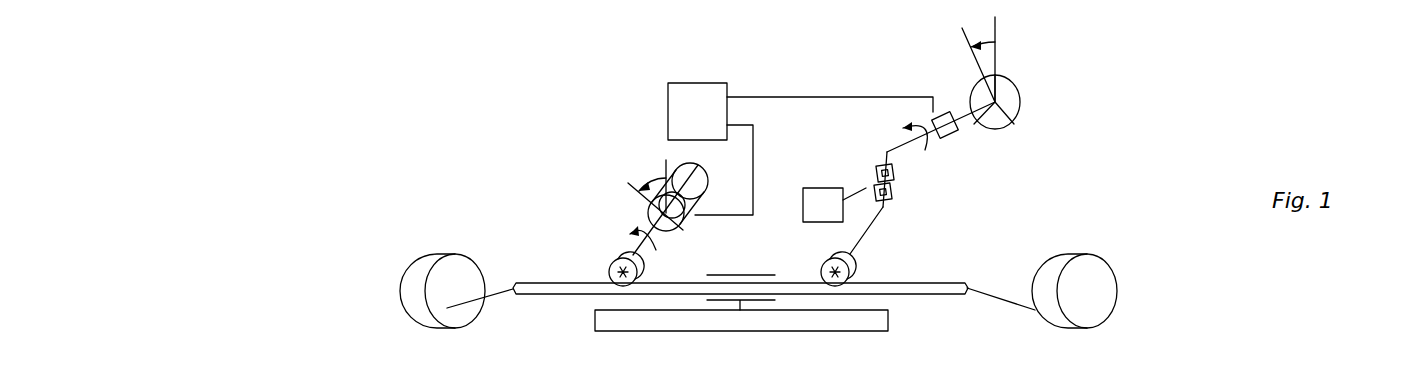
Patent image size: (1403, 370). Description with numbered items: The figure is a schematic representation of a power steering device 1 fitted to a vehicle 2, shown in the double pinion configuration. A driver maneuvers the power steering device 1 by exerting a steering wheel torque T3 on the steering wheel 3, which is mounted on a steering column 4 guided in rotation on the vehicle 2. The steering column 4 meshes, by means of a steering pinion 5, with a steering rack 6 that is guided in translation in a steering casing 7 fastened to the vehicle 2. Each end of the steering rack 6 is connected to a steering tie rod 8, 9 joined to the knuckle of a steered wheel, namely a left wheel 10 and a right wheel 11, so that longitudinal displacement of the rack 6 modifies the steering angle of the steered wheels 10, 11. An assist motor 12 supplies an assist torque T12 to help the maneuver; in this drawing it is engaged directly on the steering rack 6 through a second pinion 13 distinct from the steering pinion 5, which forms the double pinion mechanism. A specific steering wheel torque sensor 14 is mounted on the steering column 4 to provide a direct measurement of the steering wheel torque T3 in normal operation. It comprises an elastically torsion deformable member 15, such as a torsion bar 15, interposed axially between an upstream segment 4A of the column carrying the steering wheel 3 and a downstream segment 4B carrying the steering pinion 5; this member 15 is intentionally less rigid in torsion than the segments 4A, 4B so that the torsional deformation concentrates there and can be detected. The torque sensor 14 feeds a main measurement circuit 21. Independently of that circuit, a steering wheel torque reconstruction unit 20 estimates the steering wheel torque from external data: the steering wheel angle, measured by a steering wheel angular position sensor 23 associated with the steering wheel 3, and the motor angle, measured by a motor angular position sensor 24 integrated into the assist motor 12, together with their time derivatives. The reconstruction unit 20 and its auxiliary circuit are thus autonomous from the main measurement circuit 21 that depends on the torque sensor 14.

The power steering device 1 is at (1085, 148).
The vehicle 2 is at (888, 320).
The steering wheel 3 is at (1020, 95).
The steering column 4 is at (893, 158).
The upstream segment of the steering column 4A is at (887, 152).
The downstream segment of the steering column 4B is at (883, 207).
The steering pinion 5 is at (856, 278).
The steering rack 6 is at (800, 293).
The steering casing 7 is at (757, 275).
The steering tie rod 8 is at (993, 292).
The steering tie rod 9 is at (505, 288).
The left steered wheel 10 is at (1100, 282).
The right steered wheel 11 is at (410, 280).
The assist motor 12 is at (700, 179).
The second pinion 13 is at (612, 261).
The steering wheel torque sensor 14 is at (866, 170).
The elastically torsion deformable member (torsion bar) 15 is at (897, 190).
The steering wheel torque reconstruction unit 20 is at (712, 125).
The main measurement circuit 21 is at (834, 205).
The steering wheel angular position sensor 23 is at (944, 112).
The motor angular position sensor 24 is at (695, 214).
The assist torque T12 is at (656, 252).
The steering wheel torque T3 is at (925, 151).